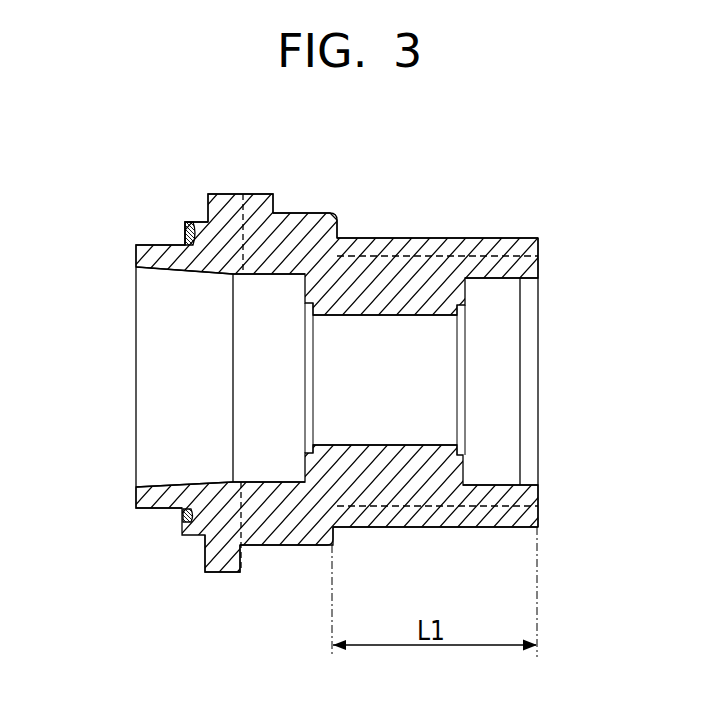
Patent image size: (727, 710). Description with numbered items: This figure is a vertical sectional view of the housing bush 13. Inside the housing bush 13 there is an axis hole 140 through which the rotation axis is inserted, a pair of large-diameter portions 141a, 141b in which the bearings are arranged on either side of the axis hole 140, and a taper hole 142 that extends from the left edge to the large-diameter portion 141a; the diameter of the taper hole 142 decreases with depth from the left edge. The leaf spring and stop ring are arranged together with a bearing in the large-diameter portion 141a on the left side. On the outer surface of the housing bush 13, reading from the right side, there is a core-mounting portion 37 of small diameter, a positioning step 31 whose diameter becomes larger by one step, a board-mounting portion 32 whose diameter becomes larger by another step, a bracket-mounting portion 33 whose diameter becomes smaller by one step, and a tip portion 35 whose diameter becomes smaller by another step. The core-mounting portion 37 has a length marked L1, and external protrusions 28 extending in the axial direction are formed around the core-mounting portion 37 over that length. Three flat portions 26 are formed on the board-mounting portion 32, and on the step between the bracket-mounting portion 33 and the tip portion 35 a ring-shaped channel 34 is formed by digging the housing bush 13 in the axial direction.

The housing bush 13 is at (549, 219).
The flat portions 26 is at (253, 195).
The external protrusions 28 is at (452, 250).
The positioning step 31 is at (339, 228).
The board-mounting portion 32 is at (222, 568).
The bracket-mounting portion 33 is at (190, 220).
The ring-shaped channel 34 is at (186, 238).
The tip portion 35 is at (153, 253).
The core-mounting portion 37 is at (490, 528).
The axis hole 140 is at (427, 368).
The large-diameter portion 141a is at (253, 423).
The large-diameter portion 141b is at (493, 422).
The taper hole 142 is at (172, 483).